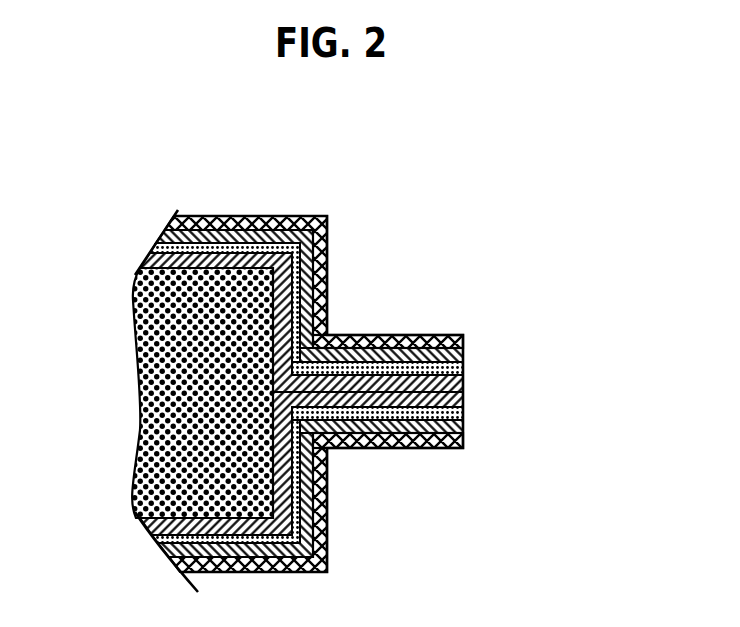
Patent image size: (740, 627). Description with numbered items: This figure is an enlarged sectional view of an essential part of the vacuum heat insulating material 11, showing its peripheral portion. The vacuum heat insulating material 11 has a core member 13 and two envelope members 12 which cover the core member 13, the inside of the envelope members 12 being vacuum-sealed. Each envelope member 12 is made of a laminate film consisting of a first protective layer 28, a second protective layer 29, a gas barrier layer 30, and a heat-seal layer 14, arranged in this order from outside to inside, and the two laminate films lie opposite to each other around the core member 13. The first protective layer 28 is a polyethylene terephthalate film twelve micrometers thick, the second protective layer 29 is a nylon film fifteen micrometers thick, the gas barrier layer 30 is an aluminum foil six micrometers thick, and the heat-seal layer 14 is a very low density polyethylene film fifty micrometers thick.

The vacuum heat insulating material 11 is at (217, 188).
The envelope member 12 is at (327, 287).
The core member 13 is at (327, 523).
The heat-seal layer 14 is at (272, 344).
The first protective layer 28 is at (463, 333).
The second protective layer 29 is at (463, 352).
The gas barrier layer 30 is at (463, 368).